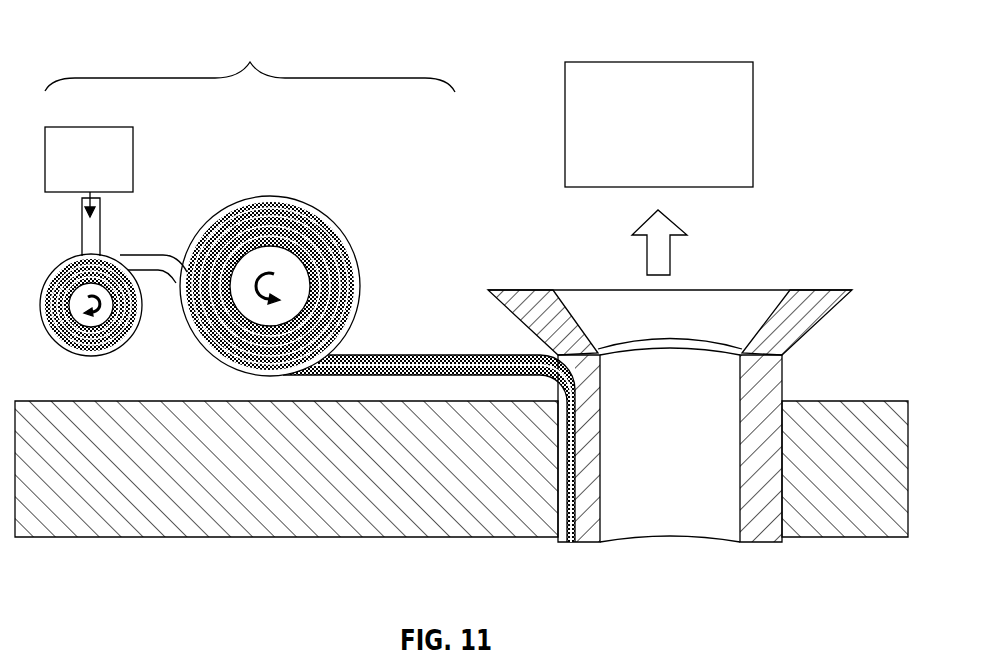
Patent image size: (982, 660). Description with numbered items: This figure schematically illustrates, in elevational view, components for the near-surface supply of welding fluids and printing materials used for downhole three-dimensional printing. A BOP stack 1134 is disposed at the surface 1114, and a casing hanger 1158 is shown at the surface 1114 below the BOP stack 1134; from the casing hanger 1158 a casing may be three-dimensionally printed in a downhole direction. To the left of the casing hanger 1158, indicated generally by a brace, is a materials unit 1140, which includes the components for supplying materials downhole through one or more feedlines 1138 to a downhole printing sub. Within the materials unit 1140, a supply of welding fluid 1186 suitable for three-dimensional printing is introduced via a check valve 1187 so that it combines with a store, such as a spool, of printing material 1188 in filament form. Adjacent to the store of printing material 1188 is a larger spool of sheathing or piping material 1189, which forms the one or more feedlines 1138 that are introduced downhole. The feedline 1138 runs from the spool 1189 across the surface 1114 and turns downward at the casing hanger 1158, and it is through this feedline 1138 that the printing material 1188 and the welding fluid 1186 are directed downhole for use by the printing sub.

The materials unit 1140 is at (250, 60).
The welding fluid 1186 is at (134, 157).
The check valve 1187 is at (102, 230).
The printing material 1188 is at (118, 346).
The spool of sheathing or piping material 1189 is at (338, 226).
The feedline 1138 is at (572, 543).
The casing hanger 1158 is at (805, 302).
The surface 1114 is at (858, 399).
The BOP stack 1134 is at (658, 62).